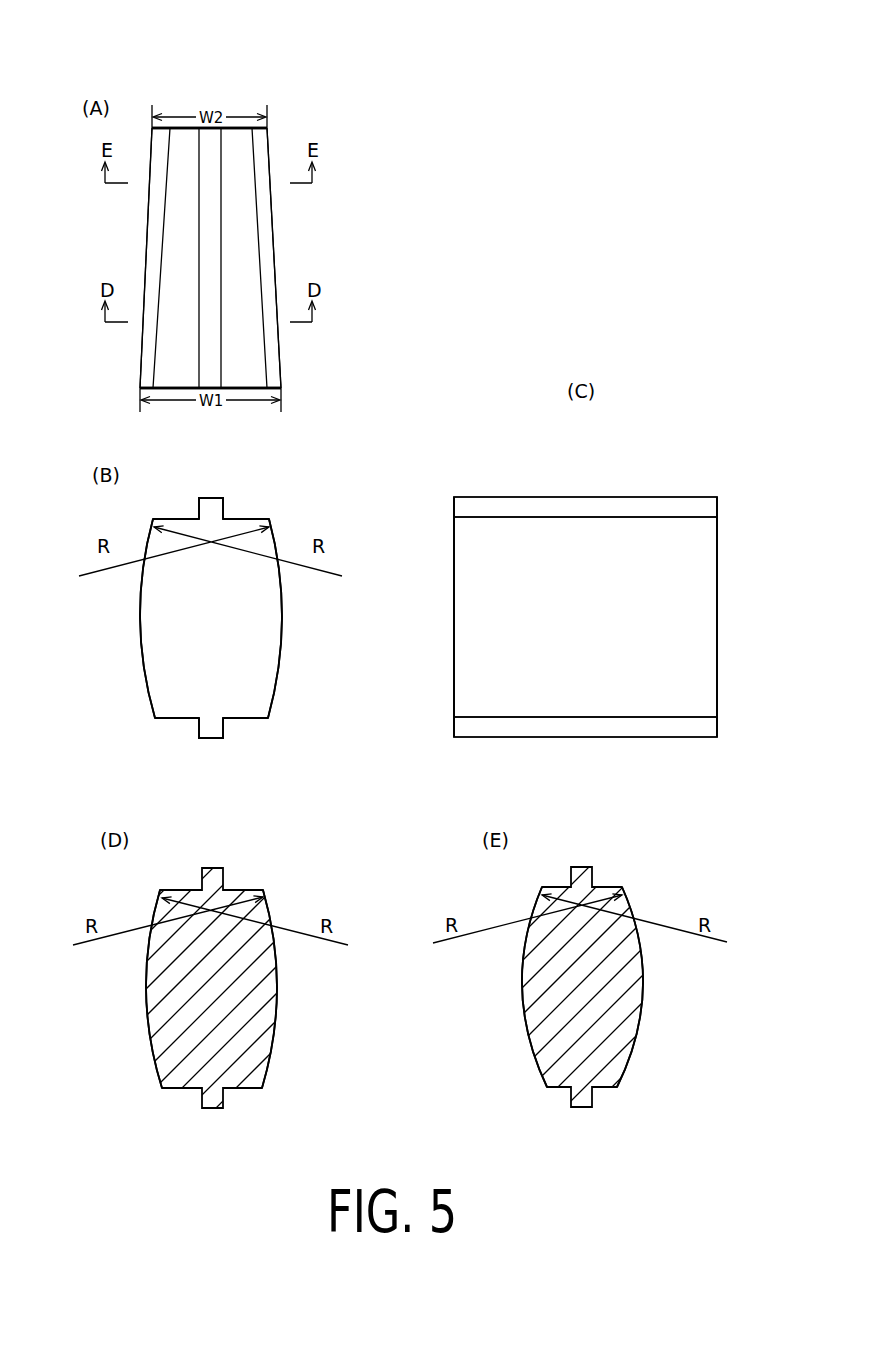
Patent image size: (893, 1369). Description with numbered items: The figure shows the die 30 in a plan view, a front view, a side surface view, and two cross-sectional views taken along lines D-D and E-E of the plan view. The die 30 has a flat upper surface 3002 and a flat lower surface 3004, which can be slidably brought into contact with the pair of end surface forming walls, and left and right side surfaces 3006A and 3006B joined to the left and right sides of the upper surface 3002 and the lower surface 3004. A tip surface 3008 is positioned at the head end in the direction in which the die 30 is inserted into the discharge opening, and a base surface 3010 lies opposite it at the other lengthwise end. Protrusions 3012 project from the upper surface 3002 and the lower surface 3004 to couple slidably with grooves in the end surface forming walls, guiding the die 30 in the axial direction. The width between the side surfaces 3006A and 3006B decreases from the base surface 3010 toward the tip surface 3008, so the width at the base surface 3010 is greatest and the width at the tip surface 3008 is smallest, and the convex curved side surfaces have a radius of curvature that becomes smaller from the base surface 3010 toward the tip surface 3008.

The die 30 is at (291, 107).
The upper surface 3002 is at (180, 200).
The lower surface 3004 is at (175, 720).
The left side surface 3006A is at (153, 247).
The right side surface 3006B is at (267, 258).
The tip surface 3008 is at (186, 125).
The base surface 3010 is at (172, 392).
The protrusions 3012 is at (212, 228).